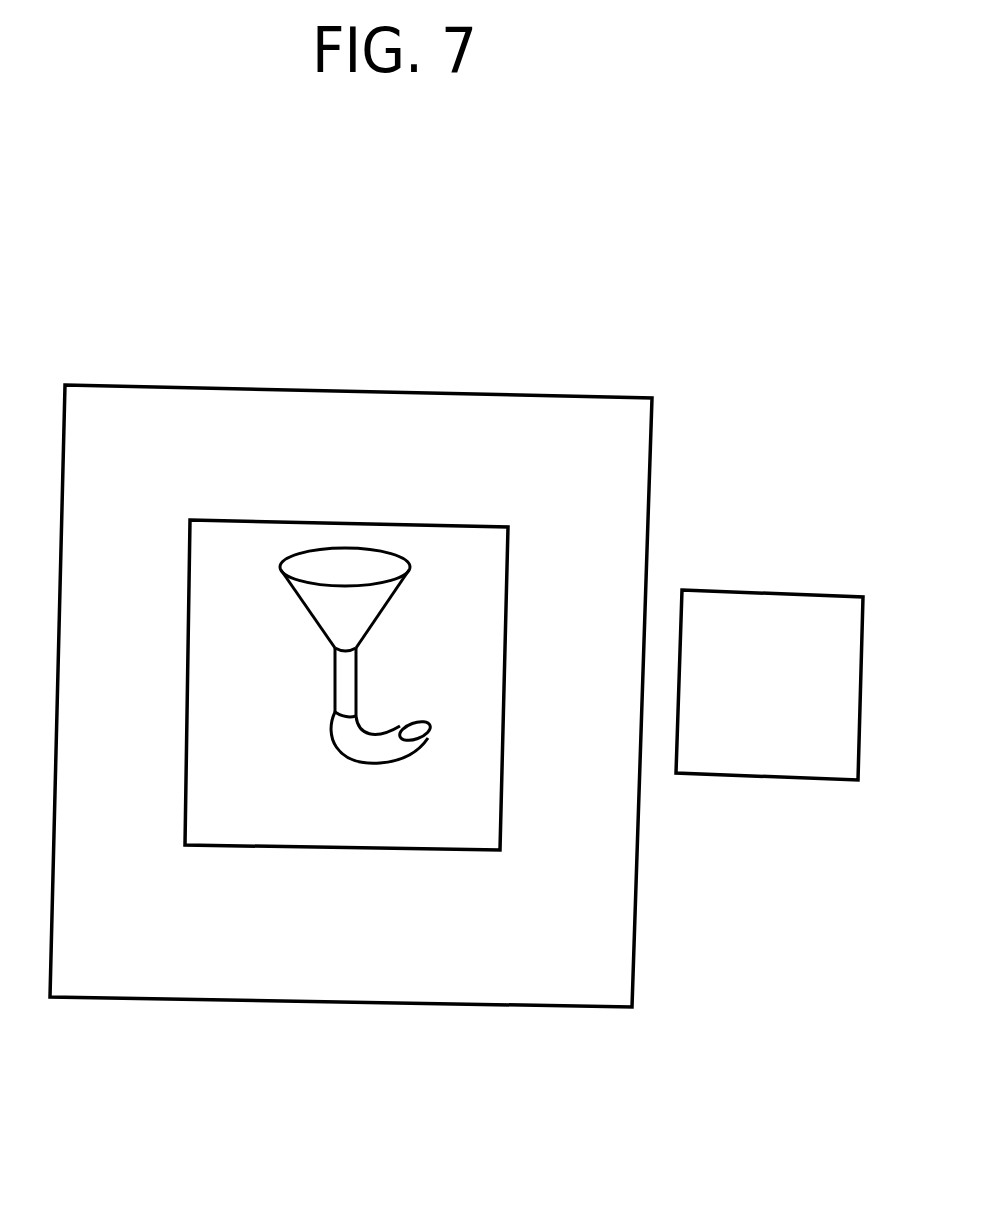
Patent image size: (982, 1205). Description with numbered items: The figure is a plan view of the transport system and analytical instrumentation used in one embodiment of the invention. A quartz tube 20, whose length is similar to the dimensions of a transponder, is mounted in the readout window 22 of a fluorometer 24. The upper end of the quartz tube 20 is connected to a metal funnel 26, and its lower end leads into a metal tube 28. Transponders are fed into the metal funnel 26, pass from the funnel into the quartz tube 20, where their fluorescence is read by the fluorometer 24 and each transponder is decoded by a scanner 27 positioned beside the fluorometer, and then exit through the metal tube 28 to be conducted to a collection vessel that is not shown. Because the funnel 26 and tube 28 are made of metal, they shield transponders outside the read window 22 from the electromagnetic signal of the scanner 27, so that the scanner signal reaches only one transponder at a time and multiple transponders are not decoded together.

The quartz tube 20 is at (318, 682).
The readout window 22 is at (384, 857).
The fluorometer 24 is at (668, 437).
The metal funnel 26 is at (344, 553).
The scanner 27 is at (778, 577).
The metal tube 28 is at (327, 761).